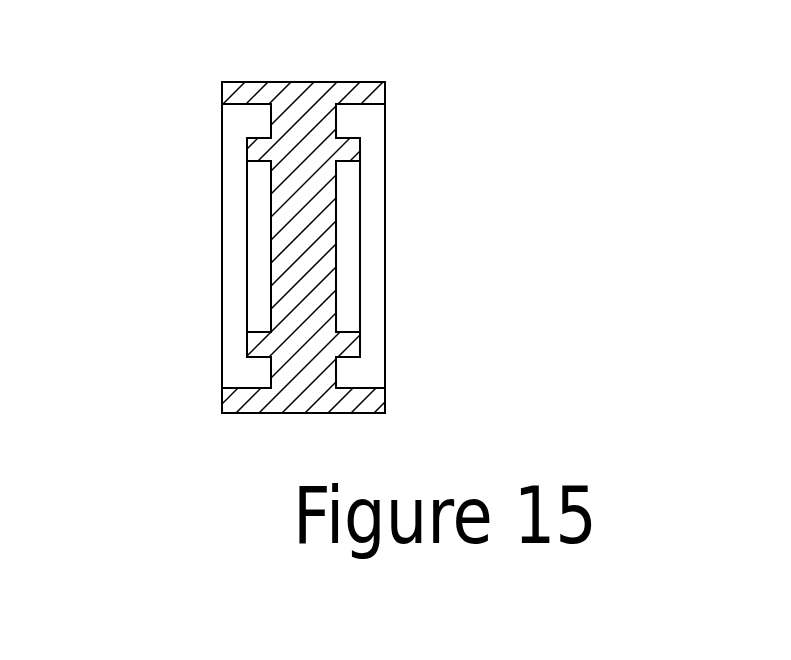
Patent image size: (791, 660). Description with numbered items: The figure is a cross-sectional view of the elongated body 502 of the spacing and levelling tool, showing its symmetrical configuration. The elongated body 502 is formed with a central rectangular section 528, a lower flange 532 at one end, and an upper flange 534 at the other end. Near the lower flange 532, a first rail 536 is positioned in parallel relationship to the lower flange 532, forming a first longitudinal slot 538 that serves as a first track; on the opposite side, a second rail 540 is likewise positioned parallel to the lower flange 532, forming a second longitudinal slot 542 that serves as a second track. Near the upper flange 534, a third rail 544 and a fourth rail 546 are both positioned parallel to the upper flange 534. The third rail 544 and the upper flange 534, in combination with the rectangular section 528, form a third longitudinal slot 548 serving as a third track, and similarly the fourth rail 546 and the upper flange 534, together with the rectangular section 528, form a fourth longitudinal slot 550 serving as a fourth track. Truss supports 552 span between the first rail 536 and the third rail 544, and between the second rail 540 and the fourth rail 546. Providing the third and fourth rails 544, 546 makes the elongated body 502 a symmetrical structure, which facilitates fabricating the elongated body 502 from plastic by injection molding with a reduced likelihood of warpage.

The elongated body 502 is at (453, 52).
The rectangular section 528 is at (283, 263).
The lower flange 532 is at (268, 400).
The upper flange 534 is at (312, 93).
The first rail 536 is at (357, 350).
The first longitudinal slot 538 is at (348, 373).
The second rail 540 is at (253, 342).
The second longitudinal slot 542 is at (253, 380).
The third rail 544 is at (357, 160).
The fourth rail 546 is at (262, 155).
The third longitudinal slot 548 is at (348, 120).
The fourth longitudinal slot 550 is at (265, 120).
The truss supports 552 is at (255, 282).